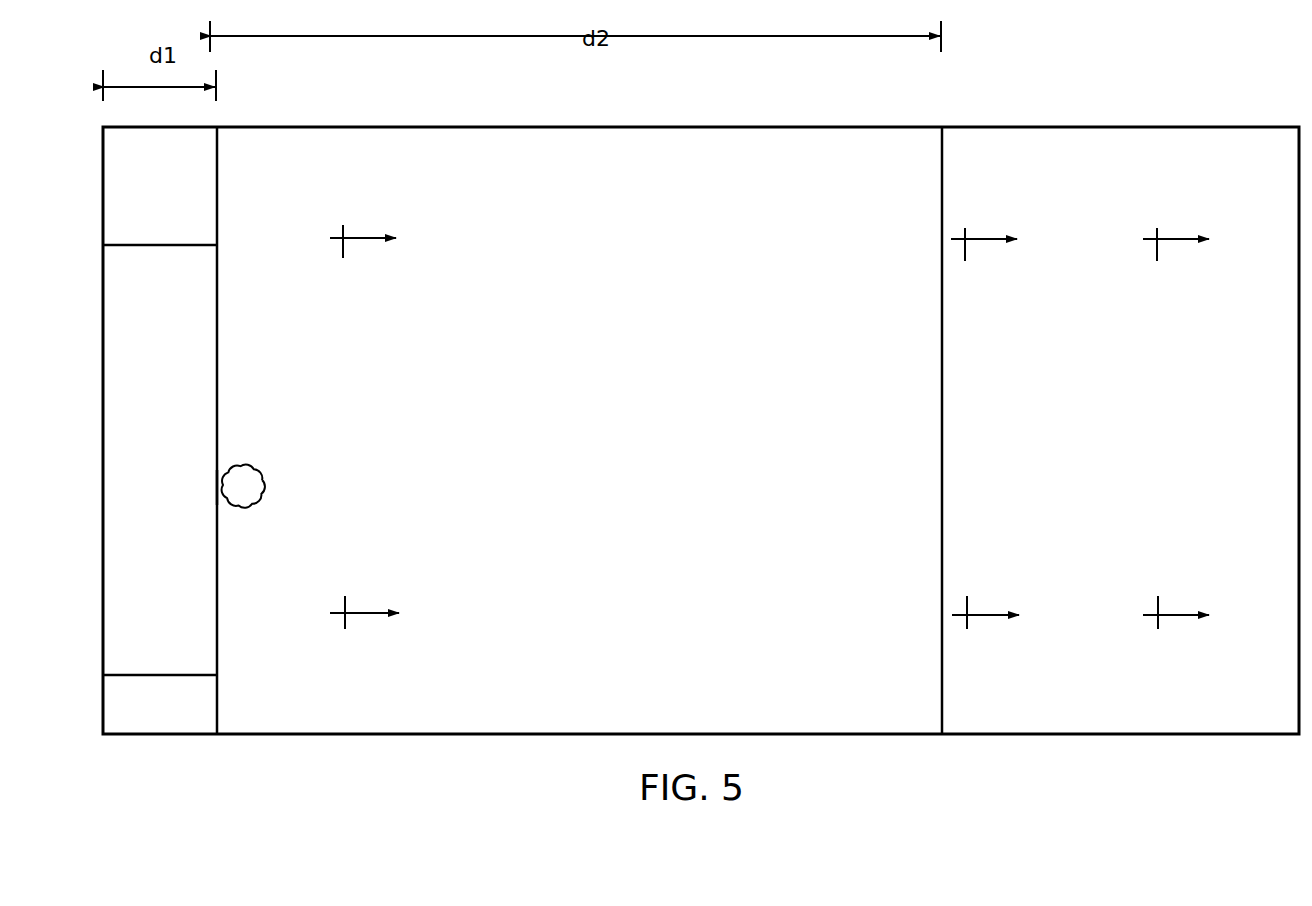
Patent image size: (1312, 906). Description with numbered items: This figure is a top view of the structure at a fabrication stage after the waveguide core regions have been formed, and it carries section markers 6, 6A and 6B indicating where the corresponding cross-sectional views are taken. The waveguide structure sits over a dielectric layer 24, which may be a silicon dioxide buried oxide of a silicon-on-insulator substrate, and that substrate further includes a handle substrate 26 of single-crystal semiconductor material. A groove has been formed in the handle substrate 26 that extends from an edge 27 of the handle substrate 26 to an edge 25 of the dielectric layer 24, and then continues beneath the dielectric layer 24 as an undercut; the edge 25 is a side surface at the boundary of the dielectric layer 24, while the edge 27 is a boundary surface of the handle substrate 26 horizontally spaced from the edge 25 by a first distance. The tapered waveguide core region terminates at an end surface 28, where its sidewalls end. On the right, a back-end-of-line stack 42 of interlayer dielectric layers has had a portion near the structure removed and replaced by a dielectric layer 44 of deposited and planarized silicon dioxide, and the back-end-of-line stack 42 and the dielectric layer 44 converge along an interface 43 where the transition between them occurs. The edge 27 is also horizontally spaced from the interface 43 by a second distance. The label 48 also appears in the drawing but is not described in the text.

The dielectric layer 24 is at (243, 483).
The edge of the dielectric layer 25 is at (217, 488).
The handle substrate 26 is at (179, 333).
The edge of the handle substrate 27 is at (103, 353).
The end surface 28 is at (214, 702).
The back-end-of-line stack 42 is at (1008, 490).
The interface 43 is at (942, 290).
The dielectric layer 44 is at (834, 373).
The upper end portion 48 is at (136, 245).
The section line 6 is at (1191, 431).
The section line 6A is at (1009, 431).
The section line 6B is at (387, 429).